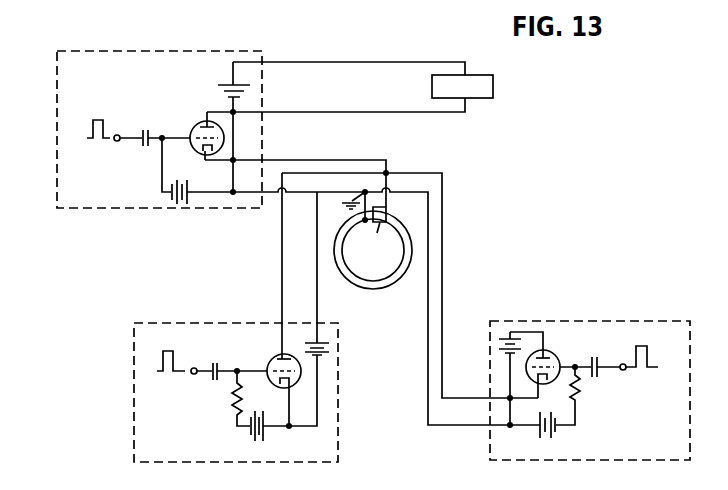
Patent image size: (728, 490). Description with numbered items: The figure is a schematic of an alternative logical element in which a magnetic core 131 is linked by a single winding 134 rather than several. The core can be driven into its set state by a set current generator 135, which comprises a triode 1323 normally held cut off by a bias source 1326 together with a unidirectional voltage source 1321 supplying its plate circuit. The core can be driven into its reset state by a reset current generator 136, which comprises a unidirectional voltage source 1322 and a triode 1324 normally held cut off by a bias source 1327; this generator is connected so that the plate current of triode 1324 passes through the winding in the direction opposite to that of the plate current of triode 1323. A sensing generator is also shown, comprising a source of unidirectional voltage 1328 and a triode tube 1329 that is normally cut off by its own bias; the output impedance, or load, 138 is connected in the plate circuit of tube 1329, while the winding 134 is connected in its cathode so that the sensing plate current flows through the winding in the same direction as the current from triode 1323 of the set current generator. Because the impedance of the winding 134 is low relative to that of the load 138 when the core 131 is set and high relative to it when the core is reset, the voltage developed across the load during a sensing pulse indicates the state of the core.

The output impedance 138 is at (57, 112).
The source of unidirectional voltage 1328 is at (218, 90).
The triode tube 1329 is at (198, 123).
The core 131 is at (382, 288).
The single winding 134 is at (372, 233).
The reset current generator 136 is at (210, 323).
The triode 1324 is at (272, 362).
The bias source 1327 is at (258, 441).
The unidirectional voltage source 1322 is at (333, 350).
The set current generator 135 is at (603, 321).
The unidirectional voltage source 1321 is at (498, 347).
The triode 1323 is at (553, 359).
The bias source 1326 is at (545, 437).